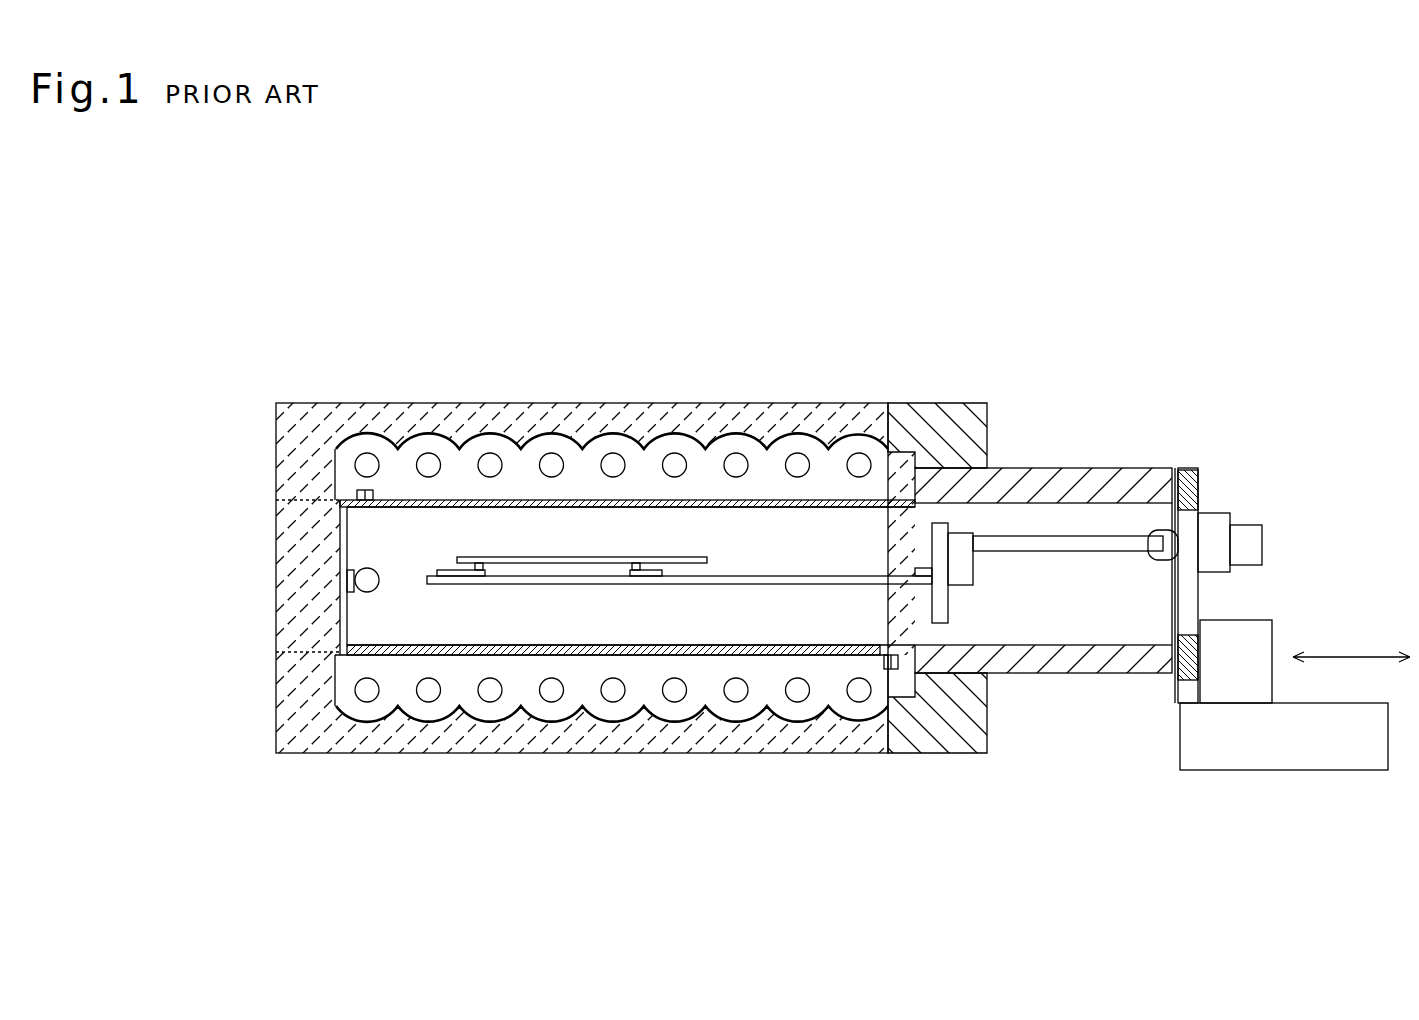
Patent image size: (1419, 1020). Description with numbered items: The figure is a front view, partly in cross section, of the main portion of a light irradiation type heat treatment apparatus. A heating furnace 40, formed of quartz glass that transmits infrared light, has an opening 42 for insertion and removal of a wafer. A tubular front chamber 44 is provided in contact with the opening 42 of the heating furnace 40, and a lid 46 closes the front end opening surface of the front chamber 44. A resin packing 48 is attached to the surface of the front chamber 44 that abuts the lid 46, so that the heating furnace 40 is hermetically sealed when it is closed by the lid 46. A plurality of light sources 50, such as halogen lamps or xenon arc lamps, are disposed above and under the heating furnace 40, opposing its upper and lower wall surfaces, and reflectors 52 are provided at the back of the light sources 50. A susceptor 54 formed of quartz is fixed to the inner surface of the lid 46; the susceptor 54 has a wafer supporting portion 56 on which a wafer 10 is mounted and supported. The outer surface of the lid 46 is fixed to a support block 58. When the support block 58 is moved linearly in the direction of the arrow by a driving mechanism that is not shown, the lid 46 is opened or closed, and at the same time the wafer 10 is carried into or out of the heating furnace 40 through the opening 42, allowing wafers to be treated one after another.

The wafer 10 is at (582, 557).
The heating furnace 40 is at (652, 657).
The opening 42 is at (968, 522).
The front chamber 44 is at (1048, 660).
The lid 46 is at (1196, 596).
The resin packing 48 is at (1190, 480).
The light sources 50 is at (613, 453).
The reflectors 52 is at (522, 438).
The susceptor 54 is at (752, 584).
The wafer supporting portion 56 is at (457, 567).
The support block 58 is at (1245, 745).